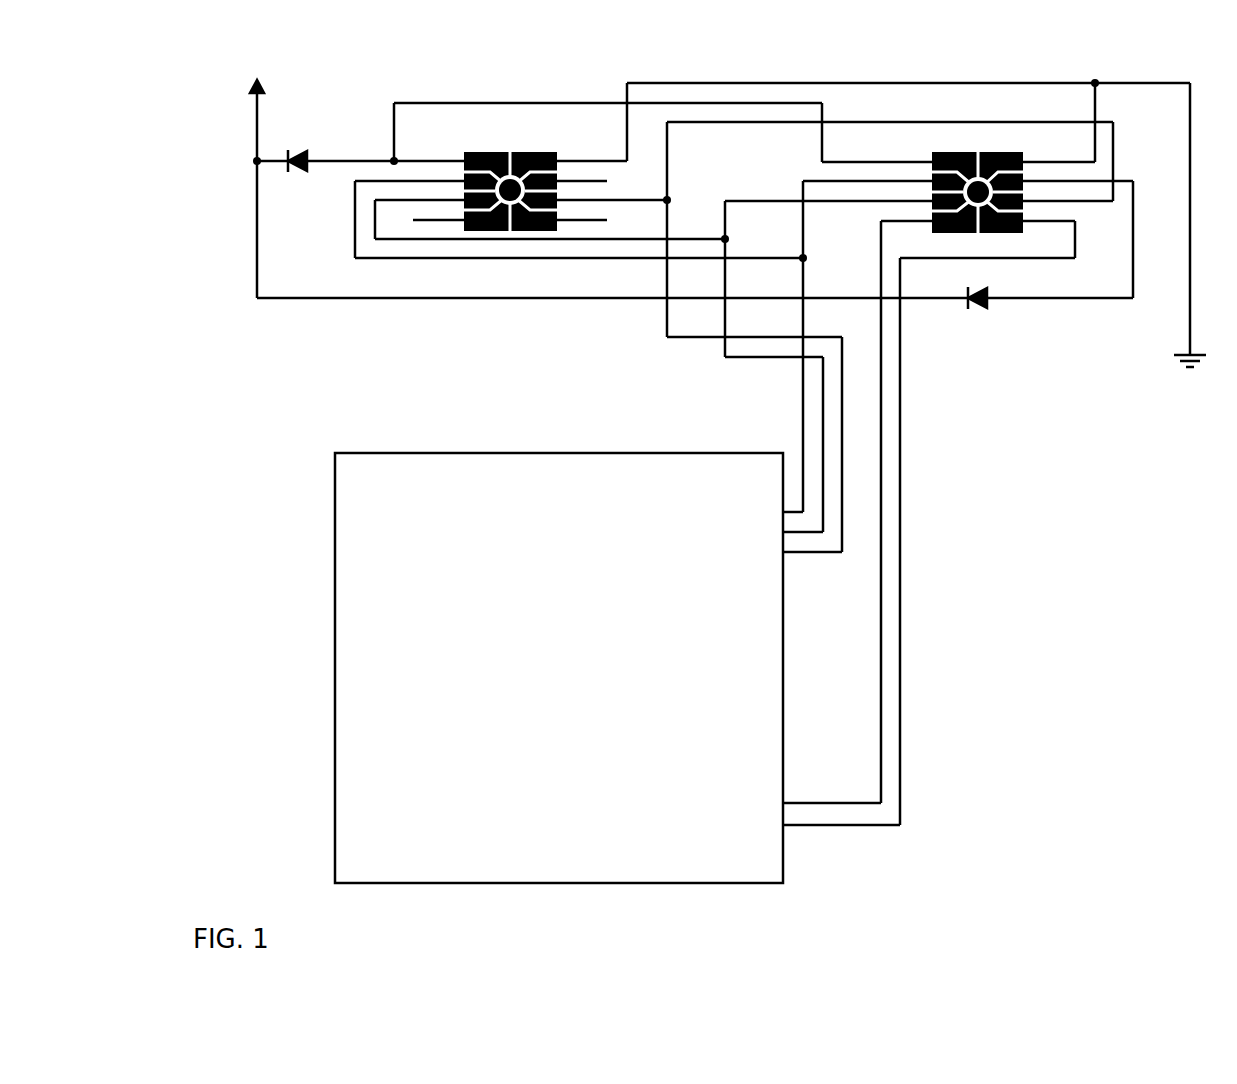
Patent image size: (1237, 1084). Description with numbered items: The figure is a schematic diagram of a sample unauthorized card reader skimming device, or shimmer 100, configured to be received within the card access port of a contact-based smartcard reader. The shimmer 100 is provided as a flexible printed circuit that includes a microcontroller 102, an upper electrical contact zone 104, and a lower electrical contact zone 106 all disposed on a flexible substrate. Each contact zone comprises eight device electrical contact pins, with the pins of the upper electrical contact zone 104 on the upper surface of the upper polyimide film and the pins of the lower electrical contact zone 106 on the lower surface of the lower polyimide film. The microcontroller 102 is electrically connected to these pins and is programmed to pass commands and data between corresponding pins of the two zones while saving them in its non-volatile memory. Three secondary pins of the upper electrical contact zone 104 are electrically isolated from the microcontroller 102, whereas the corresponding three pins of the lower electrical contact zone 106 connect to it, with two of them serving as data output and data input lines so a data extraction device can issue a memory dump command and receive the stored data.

The card reader skimming device 100 is at (1207, 873).
The microcontroller 102 is at (785, 872).
The upper electrical contact zone 104 is at (563, 136).
The lower electrical contact zone 106 is at (1031, 134).